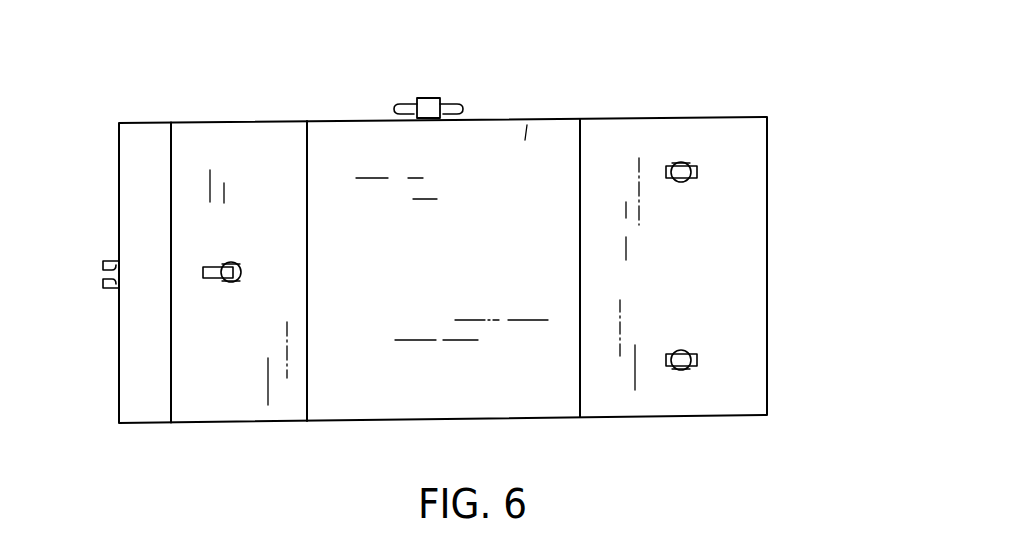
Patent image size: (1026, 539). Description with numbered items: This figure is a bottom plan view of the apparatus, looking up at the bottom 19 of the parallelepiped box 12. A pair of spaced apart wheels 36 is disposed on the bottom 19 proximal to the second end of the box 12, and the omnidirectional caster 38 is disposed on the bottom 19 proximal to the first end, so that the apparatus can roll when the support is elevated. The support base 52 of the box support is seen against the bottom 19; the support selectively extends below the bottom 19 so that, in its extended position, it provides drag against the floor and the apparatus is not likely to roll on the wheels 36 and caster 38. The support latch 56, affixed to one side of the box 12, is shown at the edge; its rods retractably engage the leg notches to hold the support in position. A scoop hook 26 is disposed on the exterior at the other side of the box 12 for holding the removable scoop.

The parallelepiped box 12 is at (778, 230).
The bottom 19 is at (250, 410).
The scoop hook 26 is at (103, 289).
The wheels 36 is at (683, 163).
The omnidirectional caster 38 is at (236, 258).
The support base 52 is at (535, 117).
The support latch 56 is at (430, 80).